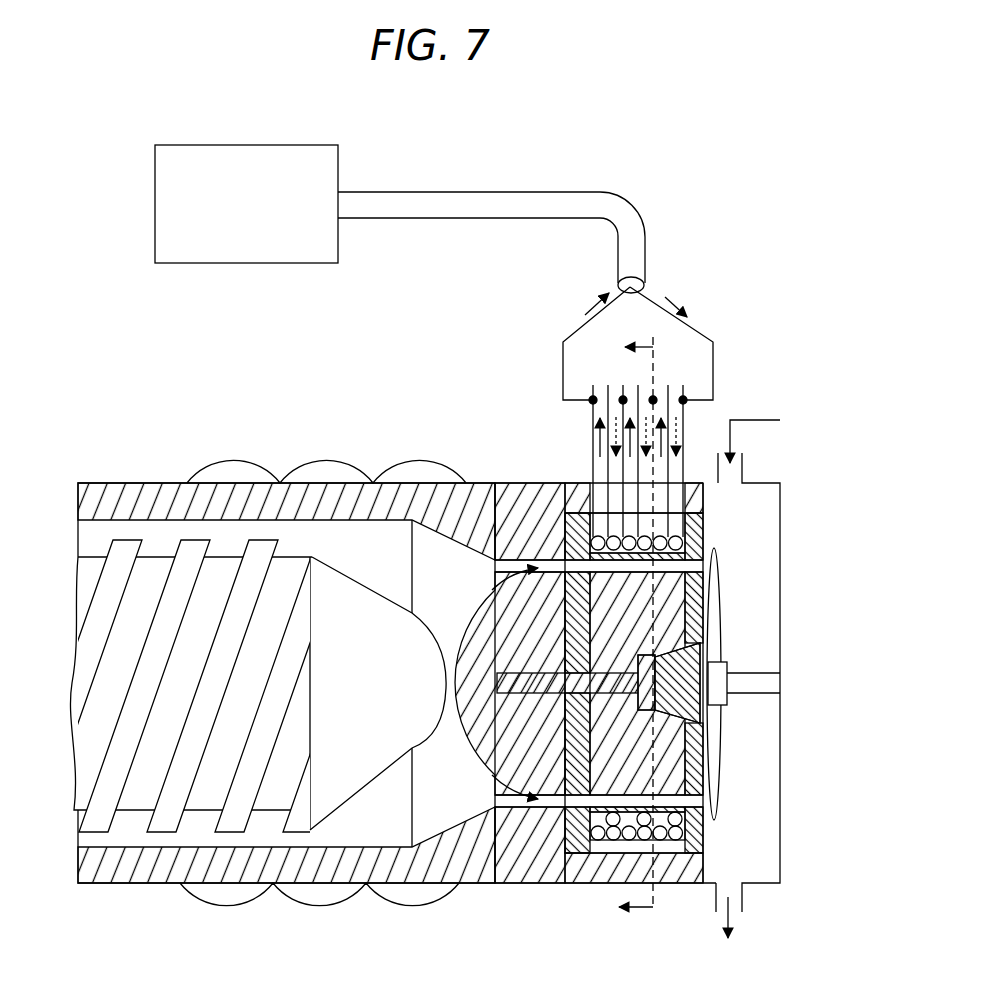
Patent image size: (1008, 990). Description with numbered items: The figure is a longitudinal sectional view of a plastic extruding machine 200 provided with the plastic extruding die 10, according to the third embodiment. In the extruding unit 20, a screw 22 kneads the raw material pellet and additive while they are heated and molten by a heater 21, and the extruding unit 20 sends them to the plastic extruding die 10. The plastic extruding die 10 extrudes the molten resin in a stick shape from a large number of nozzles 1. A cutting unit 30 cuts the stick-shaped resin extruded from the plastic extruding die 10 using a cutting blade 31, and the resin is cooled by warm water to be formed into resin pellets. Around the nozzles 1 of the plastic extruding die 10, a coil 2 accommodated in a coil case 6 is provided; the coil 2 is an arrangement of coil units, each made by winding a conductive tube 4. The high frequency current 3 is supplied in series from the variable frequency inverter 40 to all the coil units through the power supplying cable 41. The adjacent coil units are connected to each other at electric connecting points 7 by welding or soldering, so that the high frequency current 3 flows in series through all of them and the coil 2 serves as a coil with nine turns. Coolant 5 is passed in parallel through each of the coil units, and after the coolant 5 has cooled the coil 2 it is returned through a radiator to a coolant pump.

The nozzles 1 is at (492, 590).
The coil 2 is at (707, 827).
The high frequency current 3 is at (665, 297).
The conductive tube 4 is at (590, 445).
The coolant 5 is at (680, 428).
The coil case 6 is at (583, 513).
The electric connecting points 7 is at (623, 400).
The plastic extruding die 10 is at (553, 873).
The extruding unit 20 is at (127, 833).
The heater 21 is at (318, 898).
The screw 22 is at (83, 578).
The cutting unit 30 is at (772, 858).
The cutting blade 31 is at (713, 572).
The variable frequency inverter 40 is at (155, 208).
The power supplying cable 41 is at (640, 248).
The plastic extruding machine 200 is at (266, 430).